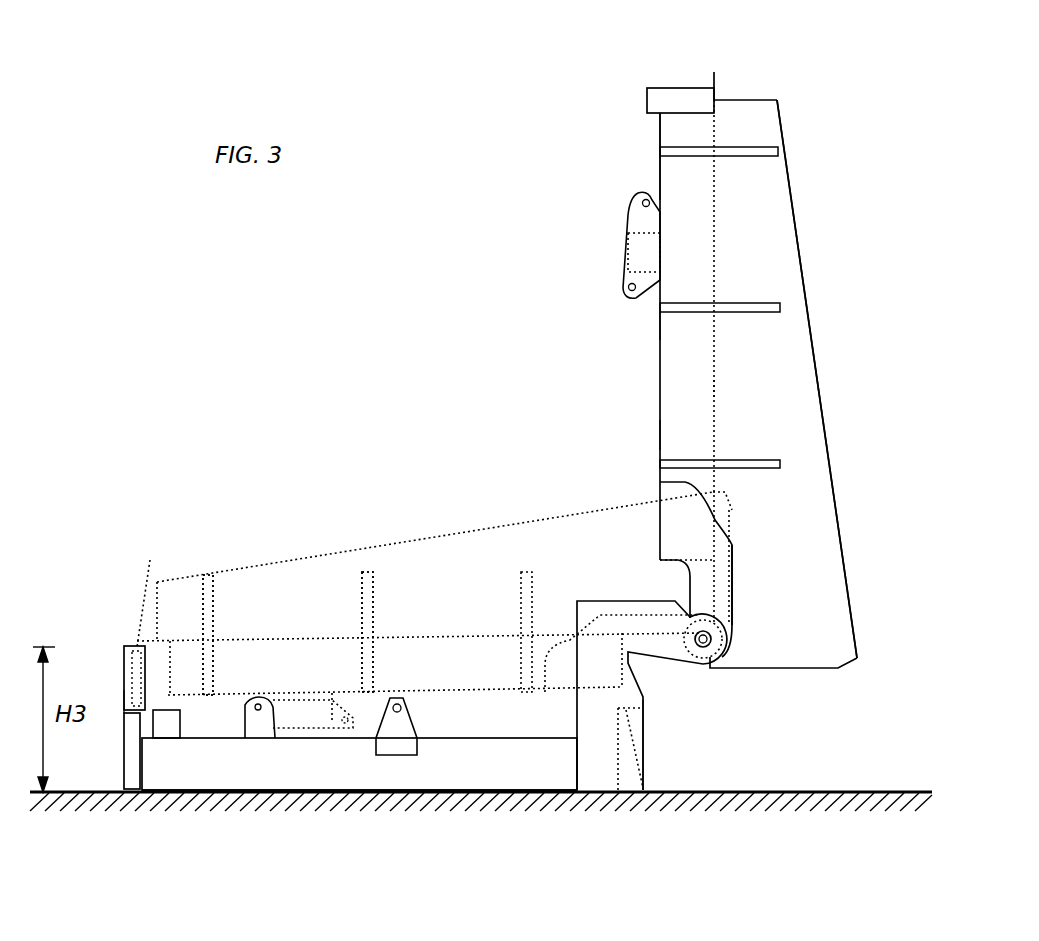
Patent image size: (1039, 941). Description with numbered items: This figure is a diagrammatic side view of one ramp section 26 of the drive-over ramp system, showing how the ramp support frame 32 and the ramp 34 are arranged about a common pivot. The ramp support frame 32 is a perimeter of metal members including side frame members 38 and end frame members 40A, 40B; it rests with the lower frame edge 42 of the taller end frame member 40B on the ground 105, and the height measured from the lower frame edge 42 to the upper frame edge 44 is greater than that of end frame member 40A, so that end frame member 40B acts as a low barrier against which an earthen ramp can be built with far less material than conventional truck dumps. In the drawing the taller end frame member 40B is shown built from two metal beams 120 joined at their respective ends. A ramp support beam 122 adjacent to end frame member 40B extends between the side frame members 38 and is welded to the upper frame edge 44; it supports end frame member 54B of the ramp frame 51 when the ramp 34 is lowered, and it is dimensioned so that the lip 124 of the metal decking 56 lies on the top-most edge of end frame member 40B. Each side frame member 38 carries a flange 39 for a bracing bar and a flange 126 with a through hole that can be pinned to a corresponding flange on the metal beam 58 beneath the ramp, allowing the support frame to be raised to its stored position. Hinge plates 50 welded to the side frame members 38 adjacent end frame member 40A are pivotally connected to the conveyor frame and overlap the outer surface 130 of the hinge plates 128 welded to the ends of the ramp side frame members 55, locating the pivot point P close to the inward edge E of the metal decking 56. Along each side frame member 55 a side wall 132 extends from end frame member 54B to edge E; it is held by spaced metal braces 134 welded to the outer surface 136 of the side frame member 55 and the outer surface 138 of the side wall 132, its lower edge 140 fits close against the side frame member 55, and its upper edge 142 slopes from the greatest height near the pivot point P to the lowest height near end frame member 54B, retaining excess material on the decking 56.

The first ramp section 26 is at (850, 313).
The ramp support frame 32 is at (500, 770).
The ramp 34 is at (660, 378).
The side frame members 38 is at (317, 787).
The flange 39 is at (395, 750).
The end frame member 40A is at (643, 728).
The end frame member 40B is at (124, 693).
The lower frame edge 42 is at (210, 792).
The upper frame edge 44 is at (208, 732).
The hinge plate 50 is at (620, 698).
The ramp frame 51 is at (672, 167).
The end frame member 54B is at (682, 93).
The side frame members 55 is at (677, 432).
The metal decking 56 is at (712, 388).
The metal beam 58 is at (643, 257).
The ground 105 is at (858, 840).
The stop block 120 is at (138, 673).
The ramp support beam 122 is at (172, 725).
The lip 124 is at (715, 77).
The flange 126 is at (247, 723).
The hinge plate 128 is at (637, 210).
The outer surface 130 is at (695, 543).
The side wall 132 is at (787, 392).
The metal braces 134 is at (750, 153).
The outer surface 136 is at (705, 258).
The outer surface 138 is at (778, 228).
The lower edge 140 is at (712, 322).
The upper edge 142 is at (813, 345).
The inward edge E is at (710, 637).
The pivot point P is at (712, 645).